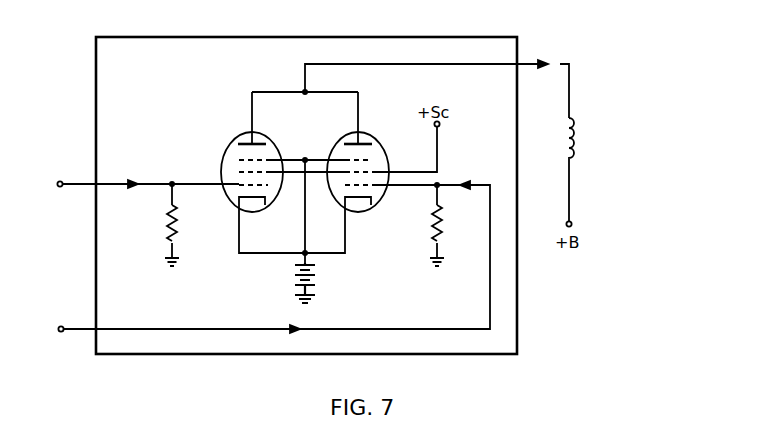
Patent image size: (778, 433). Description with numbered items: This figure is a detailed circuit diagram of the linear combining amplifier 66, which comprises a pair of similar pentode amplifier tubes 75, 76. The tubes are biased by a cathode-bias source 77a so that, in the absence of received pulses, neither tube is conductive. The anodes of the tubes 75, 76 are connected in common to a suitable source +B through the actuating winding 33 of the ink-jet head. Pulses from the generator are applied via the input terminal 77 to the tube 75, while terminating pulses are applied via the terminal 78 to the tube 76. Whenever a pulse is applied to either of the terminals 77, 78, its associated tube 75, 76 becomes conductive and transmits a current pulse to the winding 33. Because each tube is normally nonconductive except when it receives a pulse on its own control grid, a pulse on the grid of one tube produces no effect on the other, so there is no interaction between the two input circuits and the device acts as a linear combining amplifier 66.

The linear combining amplifier 66 is at (262, 37).
The pentode amplifier tube 75 is at (223, 160).
The pentode amplifier tube 76 is at (392, 160).
The input terminal 77 is at (59, 181).
The cathode-bias source 77a is at (323, 280).
The terminal 78 is at (59, 326).
The actuating winding 33 is at (580, 138).